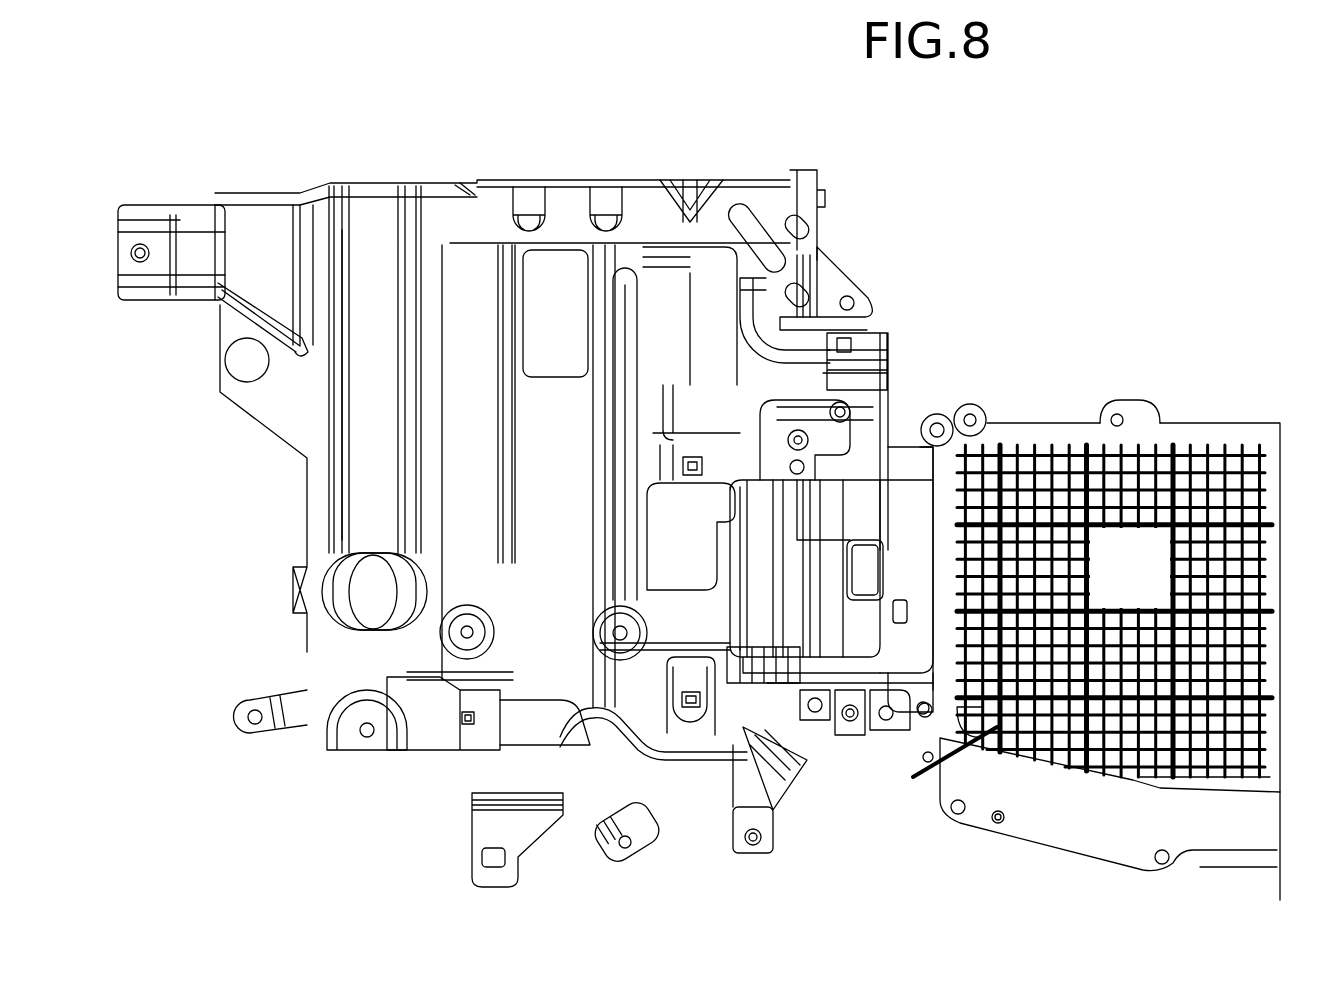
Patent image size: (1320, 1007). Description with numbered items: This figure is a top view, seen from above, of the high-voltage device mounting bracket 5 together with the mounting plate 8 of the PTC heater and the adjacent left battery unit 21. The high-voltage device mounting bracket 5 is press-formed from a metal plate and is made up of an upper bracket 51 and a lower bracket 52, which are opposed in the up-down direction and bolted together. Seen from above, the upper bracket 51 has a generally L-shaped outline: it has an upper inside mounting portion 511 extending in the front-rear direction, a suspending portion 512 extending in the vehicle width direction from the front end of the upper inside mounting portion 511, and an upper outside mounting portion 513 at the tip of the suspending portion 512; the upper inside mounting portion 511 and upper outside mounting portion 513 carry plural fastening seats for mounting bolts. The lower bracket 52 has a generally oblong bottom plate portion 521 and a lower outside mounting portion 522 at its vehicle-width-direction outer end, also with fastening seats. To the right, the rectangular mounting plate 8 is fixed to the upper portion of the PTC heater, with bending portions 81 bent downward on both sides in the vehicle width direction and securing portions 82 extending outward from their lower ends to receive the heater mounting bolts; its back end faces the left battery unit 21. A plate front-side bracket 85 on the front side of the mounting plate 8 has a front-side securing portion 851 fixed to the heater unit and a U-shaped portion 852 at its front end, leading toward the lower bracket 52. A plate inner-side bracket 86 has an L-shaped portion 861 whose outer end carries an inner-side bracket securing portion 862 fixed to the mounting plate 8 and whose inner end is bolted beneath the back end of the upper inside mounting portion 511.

The high-voltage device mounting bracket 5 is at (574, 148).
The upper bracket 51 is at (355, 207).
The upper inside mounting portion 511 is at (640, 200).
The suspending portion 512 is at (372, 445).
The upper outside mounting portion 513 is at (312, 705).
The lower bracket 52 is at (540, 718).
The bottom plate portion 521 is at (548, 598).
The lower outside mounting portion 522 is at (613, 777).
The plate inner-side bracket 86 is at (902, 302).
The L-shaped portion 861 is at (865, 430).
The inner-side bracket securing portion 862 is at (918, 430).
The left battery unit 21 is at (1198, 480).
The mounting plate 8 is at (900, 723).
The bending portion 81 is at (893, 723).
The securing portion 82 is at (867, 723).
The plate front-side bracket 85 is at (773, 683).
The front-side securing portion 851 is at (833, 627).
The U-shaped portion 852 is at (693, 640).